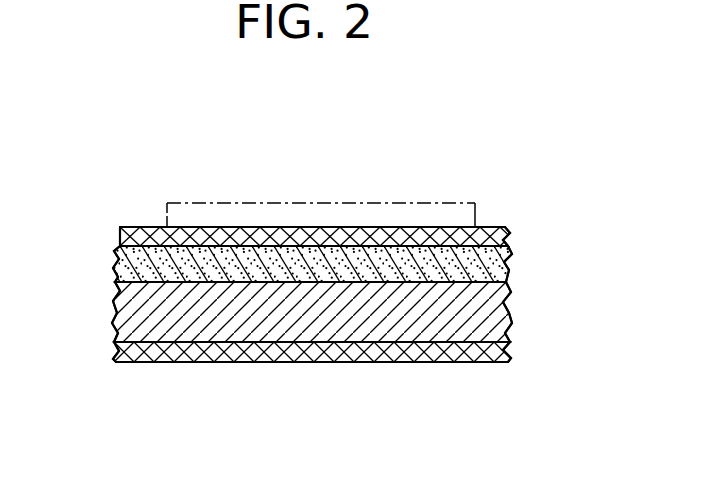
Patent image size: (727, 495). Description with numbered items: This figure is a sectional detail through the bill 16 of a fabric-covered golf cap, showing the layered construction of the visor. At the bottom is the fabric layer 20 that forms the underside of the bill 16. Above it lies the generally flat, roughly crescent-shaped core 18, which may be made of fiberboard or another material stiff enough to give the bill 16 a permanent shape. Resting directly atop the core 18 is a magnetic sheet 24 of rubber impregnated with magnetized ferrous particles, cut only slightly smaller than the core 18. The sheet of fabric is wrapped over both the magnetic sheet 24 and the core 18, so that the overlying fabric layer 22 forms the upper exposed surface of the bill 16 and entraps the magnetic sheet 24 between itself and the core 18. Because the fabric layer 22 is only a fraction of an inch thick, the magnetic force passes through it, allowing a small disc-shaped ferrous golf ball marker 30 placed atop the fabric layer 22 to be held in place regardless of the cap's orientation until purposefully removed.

The bill 16 is at (132, 217).
The core 18 is at (490, 317).
The fabric layer 20 is at (438, 355).
The overlying fabric layer 22 is at (487, 226).
The magnetic sheet 24 is at (503, 262).
The golf ball marker 30 is at (375, 203).